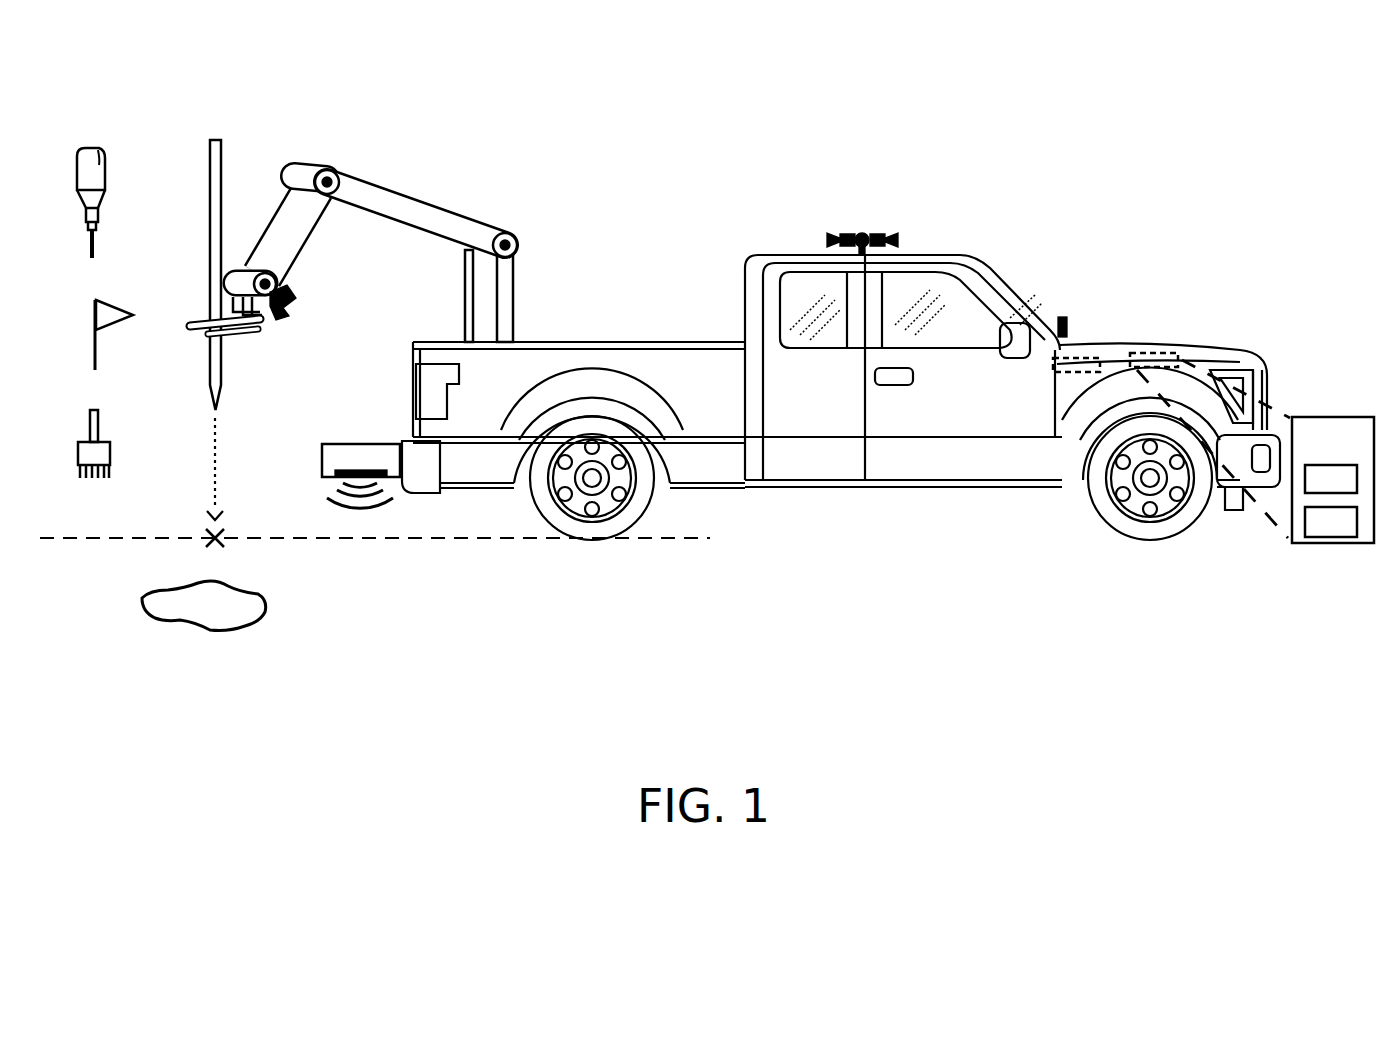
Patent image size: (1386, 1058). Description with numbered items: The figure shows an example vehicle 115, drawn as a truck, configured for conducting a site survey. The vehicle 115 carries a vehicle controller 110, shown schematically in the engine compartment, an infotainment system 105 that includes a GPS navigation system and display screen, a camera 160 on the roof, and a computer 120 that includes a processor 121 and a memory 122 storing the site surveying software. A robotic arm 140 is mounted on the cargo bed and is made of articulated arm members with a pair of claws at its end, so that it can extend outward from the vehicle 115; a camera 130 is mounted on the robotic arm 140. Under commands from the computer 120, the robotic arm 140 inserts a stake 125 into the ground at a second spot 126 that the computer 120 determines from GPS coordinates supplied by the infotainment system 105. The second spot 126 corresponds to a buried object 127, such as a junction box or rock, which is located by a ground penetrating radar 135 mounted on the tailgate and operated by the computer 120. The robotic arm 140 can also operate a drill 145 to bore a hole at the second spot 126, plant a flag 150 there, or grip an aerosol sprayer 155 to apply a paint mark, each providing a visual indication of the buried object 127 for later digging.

The infotainment system 105 is at (1062, 317).
The vehicle controller 110 is at (1087, 358).
The vehicle 115 is at (1071, 212).
The computer 120 is at (1165, 353).
The processor 121 is at (1331, 479).
The memory 122 is at (1331, 522).
The stake 125 is at (208, 272).
The second spot 126 is at (236, 542).
The buried object 127 is at (272, 620).
The camera 130 is at (290, 305).
The ground penetrating radar 135 is at (360, 444).
The robotic arm 140 is at (498, 214).
The drill 145 is at (77, 172).
The flag 150 is at (92, 350).
The aerosol sprayer 155 is at (110, 462).
The camera 160 is at (884, 227).